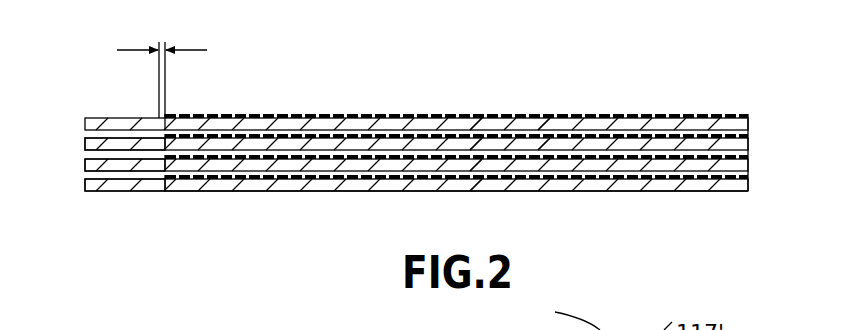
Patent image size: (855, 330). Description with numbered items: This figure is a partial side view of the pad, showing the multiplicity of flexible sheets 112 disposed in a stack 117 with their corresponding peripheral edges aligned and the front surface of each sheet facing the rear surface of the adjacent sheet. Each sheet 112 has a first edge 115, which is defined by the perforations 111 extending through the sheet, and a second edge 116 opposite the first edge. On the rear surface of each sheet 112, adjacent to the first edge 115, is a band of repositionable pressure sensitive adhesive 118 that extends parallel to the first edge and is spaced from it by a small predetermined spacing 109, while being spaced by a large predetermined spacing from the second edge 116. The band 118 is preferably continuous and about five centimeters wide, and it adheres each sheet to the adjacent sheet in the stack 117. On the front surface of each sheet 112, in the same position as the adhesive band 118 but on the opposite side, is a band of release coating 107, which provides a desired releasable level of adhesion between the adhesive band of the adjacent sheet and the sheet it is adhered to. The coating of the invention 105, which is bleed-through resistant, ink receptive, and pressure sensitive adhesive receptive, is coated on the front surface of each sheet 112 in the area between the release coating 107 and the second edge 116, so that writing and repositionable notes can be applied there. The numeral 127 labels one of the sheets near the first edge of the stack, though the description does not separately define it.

The coating of the invention 105 is at (706, 118).
The release coating 107 is at (415, 150).
The small predetermined spacing 109 is at (132, 49).
The perforations 111 is at (160, 148).
The flexible sheets 112 is at (456, 186).
The first edge 115 is at (152, 164).
The second edge 116 is at (748, 168).
The stack 117 is at (418, 135).
The band of repositionable pressure sensitive adhesive 118 is at (186, 194).
The fabric layer 127 is at (85, 143).